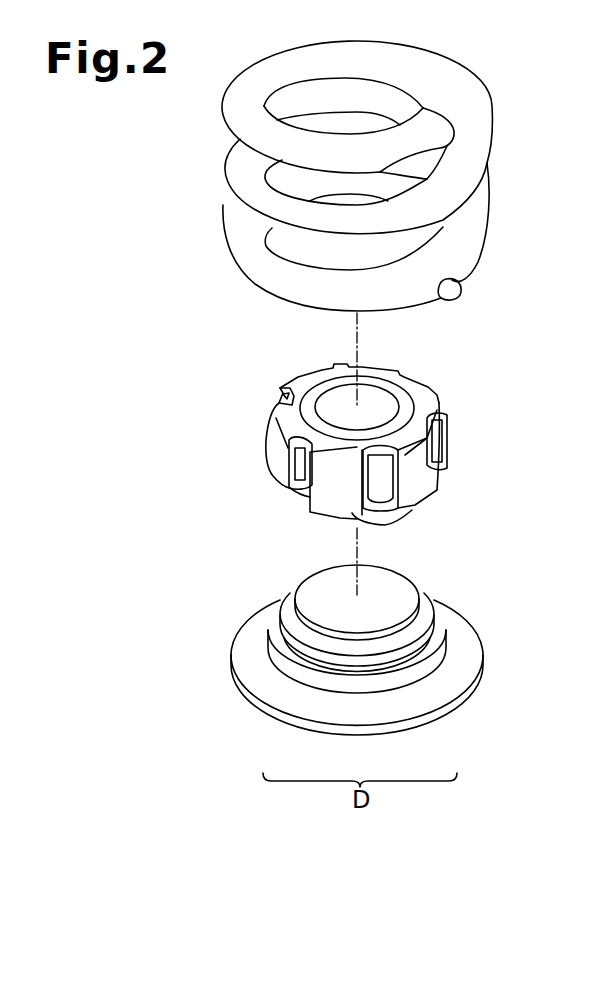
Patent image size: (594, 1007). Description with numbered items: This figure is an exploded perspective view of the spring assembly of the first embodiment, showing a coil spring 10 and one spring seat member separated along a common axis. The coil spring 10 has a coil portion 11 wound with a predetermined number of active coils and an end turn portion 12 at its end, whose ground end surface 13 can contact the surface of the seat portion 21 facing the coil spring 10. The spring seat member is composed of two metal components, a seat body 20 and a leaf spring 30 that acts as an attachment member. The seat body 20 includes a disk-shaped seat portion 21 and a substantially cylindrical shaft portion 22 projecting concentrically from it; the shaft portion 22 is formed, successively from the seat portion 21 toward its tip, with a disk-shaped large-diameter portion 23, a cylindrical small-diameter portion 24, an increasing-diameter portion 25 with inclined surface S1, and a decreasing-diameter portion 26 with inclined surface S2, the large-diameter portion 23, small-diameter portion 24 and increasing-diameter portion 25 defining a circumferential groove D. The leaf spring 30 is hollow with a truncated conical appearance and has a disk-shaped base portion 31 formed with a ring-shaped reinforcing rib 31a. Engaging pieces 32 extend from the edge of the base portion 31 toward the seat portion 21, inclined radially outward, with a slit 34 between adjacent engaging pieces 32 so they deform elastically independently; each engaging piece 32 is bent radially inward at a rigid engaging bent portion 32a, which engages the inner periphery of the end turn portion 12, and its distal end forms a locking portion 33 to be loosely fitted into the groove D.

The coil spring 10 is at (396, 188).
The coil portion 11 is at (462, 173).
The end turn portion 12 is at (463, 275).
The ground end surface 13 is at (456, 289).
The seat body 20 is at (389, 665).
The seat portion 21 is at (460, 659).
The shaft portion 22 is at (320, 583).
The large-diameter portion 23 is at (404, 678).
The small-diameter portion 24 is at (363, 677).
The increasing-diameter portion 25 is at (336, 664).
The decreasing-diameter portion 26 is at (423, 610).
The leaf spring 30 is at (378, 449).
The base portion 31 is at (418, 400).
The reinforcing rib 31a is at (313, 397).
The engaging piece 32 is at (378, 517).
The engaging bent portion 32a is at (327, 513).
The locking portion 33 is at (380, 479).
The slit 34 is at (336, 483).